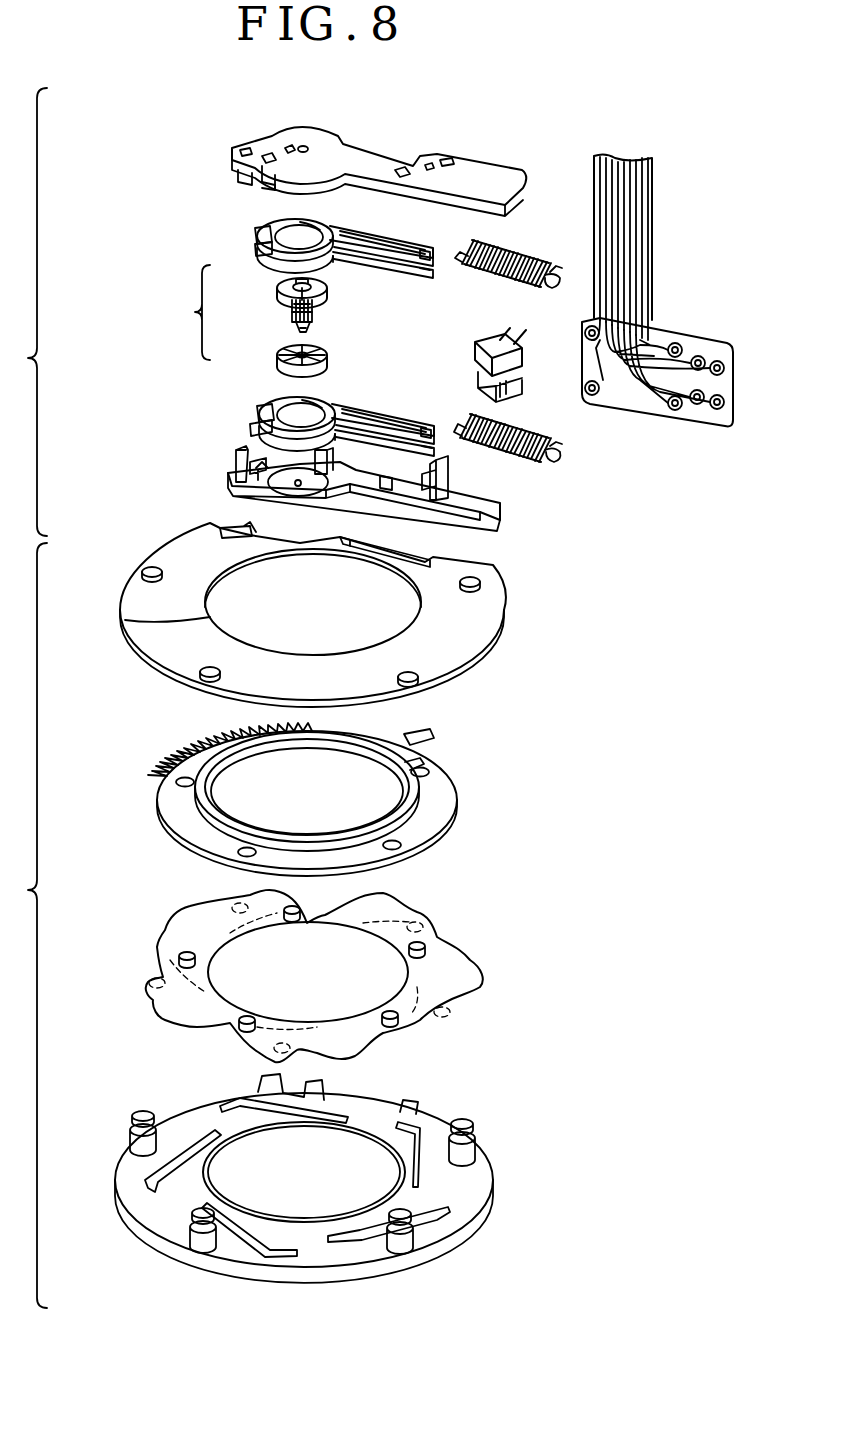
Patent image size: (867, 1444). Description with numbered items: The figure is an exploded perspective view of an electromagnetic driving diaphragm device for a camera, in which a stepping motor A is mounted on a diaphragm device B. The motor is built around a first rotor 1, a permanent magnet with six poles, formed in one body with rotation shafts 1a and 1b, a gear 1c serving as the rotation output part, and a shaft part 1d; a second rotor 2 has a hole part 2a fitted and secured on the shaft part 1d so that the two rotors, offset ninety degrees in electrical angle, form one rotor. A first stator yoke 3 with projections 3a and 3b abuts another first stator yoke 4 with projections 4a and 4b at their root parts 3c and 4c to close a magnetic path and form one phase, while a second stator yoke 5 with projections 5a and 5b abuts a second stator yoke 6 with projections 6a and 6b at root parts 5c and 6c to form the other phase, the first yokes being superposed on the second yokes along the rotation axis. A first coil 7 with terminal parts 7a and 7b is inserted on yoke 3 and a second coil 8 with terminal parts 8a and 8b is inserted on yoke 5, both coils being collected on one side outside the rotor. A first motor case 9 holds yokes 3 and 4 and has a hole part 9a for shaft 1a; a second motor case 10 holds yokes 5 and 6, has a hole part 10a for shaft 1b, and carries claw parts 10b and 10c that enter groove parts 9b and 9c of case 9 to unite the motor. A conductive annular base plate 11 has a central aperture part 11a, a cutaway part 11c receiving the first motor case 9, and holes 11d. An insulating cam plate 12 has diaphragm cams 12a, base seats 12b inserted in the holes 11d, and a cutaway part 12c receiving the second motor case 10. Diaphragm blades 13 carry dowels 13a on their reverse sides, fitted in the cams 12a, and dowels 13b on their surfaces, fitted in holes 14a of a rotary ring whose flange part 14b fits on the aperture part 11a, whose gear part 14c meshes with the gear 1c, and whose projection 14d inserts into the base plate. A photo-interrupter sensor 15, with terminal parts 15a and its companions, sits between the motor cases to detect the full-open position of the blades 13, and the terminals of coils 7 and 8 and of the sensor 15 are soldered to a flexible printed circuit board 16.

The electromagnetic driving motor A is at (26, 312).
The diaphragm device B is at (26, 925).
The first rotor 1 is at (318, 298).
The rotation shaft 1a is at (292, 286).
The rotation shaft 1b is at (306, 328).
The gear 1c is at (314, 310).
The shaft part 1d is at (294, 304).
The second rotor 2 is at (326, 364).
The hole part 2a is at (290, 352).
The first stator yoke 3 is at (380, 255).
The projection 3a is at (262, 232).
The projection 3b is at (320, 226).
The root part 3c is at (430, 252).
The first stator yoke 4 is at (372, 258).
The projection 4a is at (258, 250).
The projection 4b is at (334, 256).
The root part 4c is at (420, 272).
The second stator yoke 5 is at (380, 436).
The projection 5a is at (264, 410).
The projection 5b is at (324, 404).
The root part 5c is at (428, 430).
The second stator yoke 6 is at (362, 428).
The projection 6a is at (258, 428).
The projection 6b is at (336, 436).
The root part 6c is at (422, 450).
The first coil 7 is at (492, 270).
The terminal part 7a is at (470, 254).
The terminal part 7b is at (556, 268).
The second coil 8 is at (516, 432).
The terminal part 8a is at (466, 426).
The terminal part 8b is at (562, 448).
The first motor case 9 is at (290, 132).
The hole part 9a is at (310, 146).
The groove part 9b is at (244, 150).
The groove part 9c is at (448, 160).
The second motor case 10 is at (460, 520).
The hole part 10a is at (298, 486).
The claw part 10b is at (240, 452).
The claw part 10c is at (448, 478).
The annular base plate 11 is at (490, 610).
The aperture part 11a is at (135, 638).
The cutaway part 11c is at (265, 535).
The holes 11d is at (142, 570).
The cam plate 12 is at (470, 1196).
The diaphragm cams 12a is at (350, 1240).
The base seats 12b is at (413, 1245).
The cutaway part 12c is at (392, 1108).
The diaphragm blades 13 is at (362, 1032).
The dowels 13a is at (450, 1012).
The dowels 13b is at (398, 1018).
The holes 14a is at (400, 846).
The flange part 14b is at (424, 764).
The gear part 14c is at (204, 746).
The projection 14d is at (430, 734).
The sensor 15 is at (490, 352).
The terminal parts 15a is at (520, 312).
The flexible printed circuit board 16 is at (700, 345).